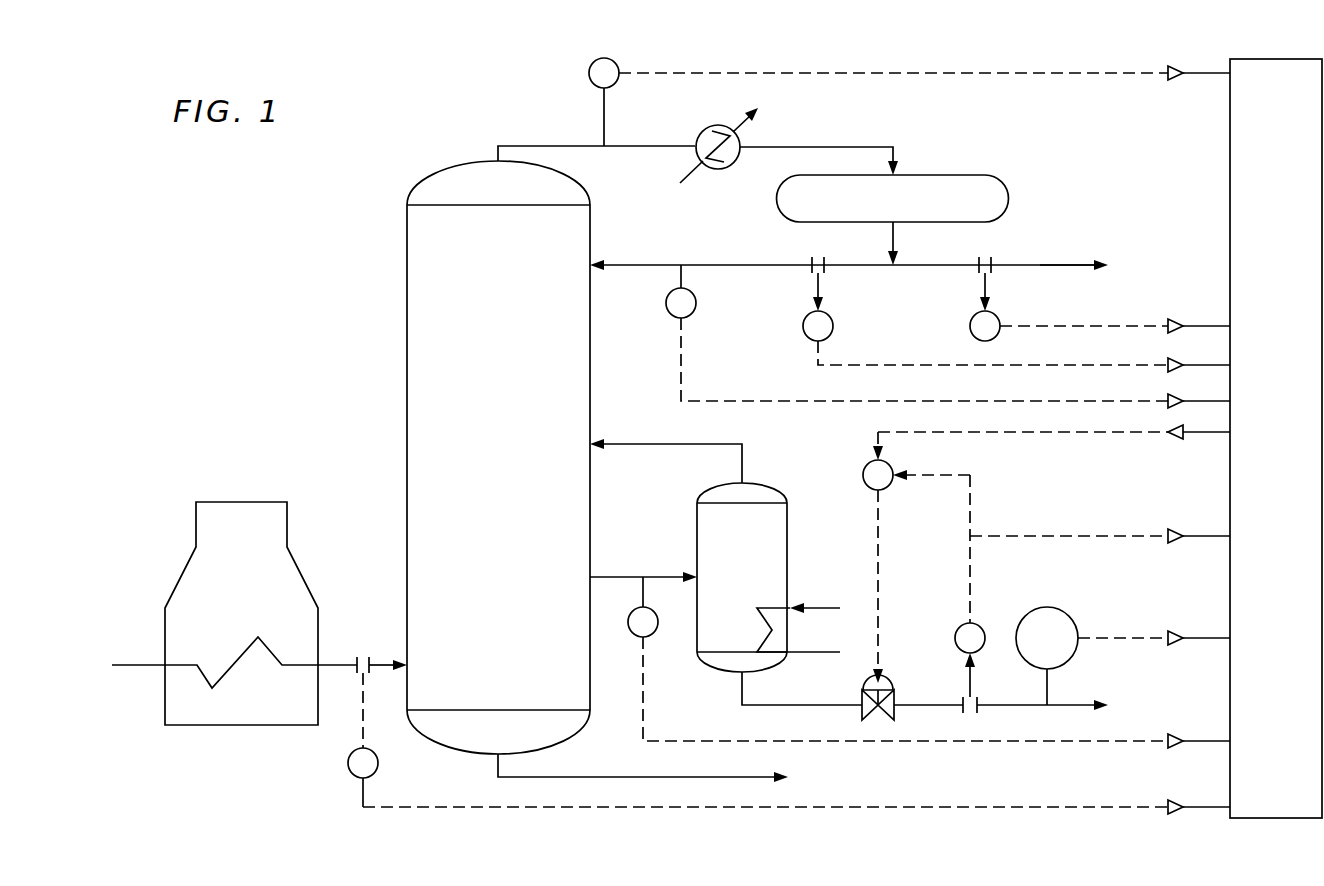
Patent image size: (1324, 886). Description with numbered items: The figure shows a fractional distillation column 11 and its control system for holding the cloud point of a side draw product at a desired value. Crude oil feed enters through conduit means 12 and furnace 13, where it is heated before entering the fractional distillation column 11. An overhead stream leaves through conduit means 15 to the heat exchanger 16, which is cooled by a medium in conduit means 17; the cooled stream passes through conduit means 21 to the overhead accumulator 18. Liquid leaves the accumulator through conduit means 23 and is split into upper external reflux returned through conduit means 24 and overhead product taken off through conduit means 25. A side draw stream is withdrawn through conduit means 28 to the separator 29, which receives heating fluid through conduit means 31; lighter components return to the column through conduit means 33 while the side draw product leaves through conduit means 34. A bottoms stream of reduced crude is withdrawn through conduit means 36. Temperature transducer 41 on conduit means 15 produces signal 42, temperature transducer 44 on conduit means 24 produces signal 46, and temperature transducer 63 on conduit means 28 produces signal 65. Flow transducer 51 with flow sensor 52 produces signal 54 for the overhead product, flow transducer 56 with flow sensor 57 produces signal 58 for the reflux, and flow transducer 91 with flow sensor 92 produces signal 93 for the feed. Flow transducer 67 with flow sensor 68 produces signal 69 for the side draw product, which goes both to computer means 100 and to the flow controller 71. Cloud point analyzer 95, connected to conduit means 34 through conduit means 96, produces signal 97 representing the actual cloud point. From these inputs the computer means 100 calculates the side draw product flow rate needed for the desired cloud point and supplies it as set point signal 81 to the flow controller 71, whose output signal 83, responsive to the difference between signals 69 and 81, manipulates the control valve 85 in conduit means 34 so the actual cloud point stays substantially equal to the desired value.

The fractional distillation column 11 is at (407, 303).
The conduit means 12 is at (134, 664).
The furnace 13 is at (287, 522).
The conduit means 15 is at (498, 146).
The heat exchanger 16 is at (698, 133).
The conduit means 17 is at (692, 171).
The overhead accumulator 18 is at (942, 175).
The conduit means 21 is at (814, 147).
The conduit means 23 is at (899, 234).
The conduit means 24 is at (864, 266).
The conduit means 25 is at (1062, 264).
The conduit means 28 is at (620, 576).
The separator 29 is at (787, 513).
The conduit means 31 is at (824, 610).
The conduit means 33 is at (658, 444).
The conduit means 34 is at (804, 705).
The conduit means 36 is at (590, 777).
The temperature transducer 41 is at (589, 73).
The output signal 42 is at (890, 73).
The temperature transducer 44 is at (698, 295).
The output signal 46 is at (716, 398).
The flow transducer 51 is at (1000, 320).
The flow sensor 52 is at (996, 264).
The output signal 54 is at (1100, 324).
The flow transducer 56 is at (802, 326).
The flow sensor 57 is at (808, 258).
The output signal 58 is at (815, 363).
The temperature transducer 63 is at (648, 640).
The output signal 65 is at (646, 704).
The flow transducer 67 is at (955, 632).
The flow sensor 68 is at (982, 703).
The output signal 69 is at (970, 578).
The flow controller 71 is at (894, 463).
The set point signal 81 is at (1076, 432).
The output signal 83 is at (882, 539).
The control valve 85 is at (890, 686).
The flow transducer 91 is at (348, 768).
The flow sensor 92 is at (363, 655).
The output signal 93 is at (363, 806).
The cloud point analyzer 95 is at (1064, 615).
The conduit means 96 is at (1048, 688).
The output signal 97 is at (1136, 640).
The computer means 100 is at (1230, 172).